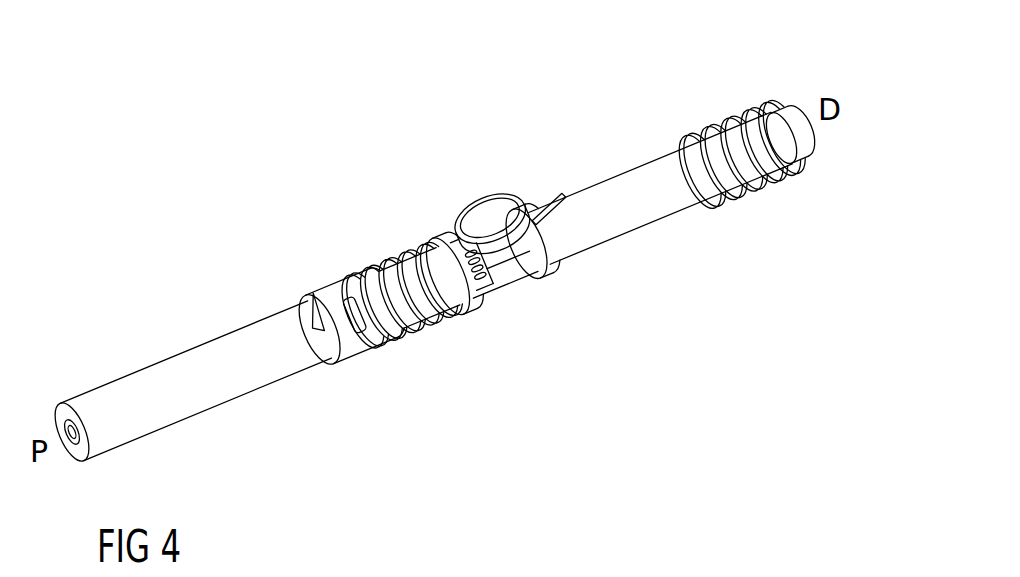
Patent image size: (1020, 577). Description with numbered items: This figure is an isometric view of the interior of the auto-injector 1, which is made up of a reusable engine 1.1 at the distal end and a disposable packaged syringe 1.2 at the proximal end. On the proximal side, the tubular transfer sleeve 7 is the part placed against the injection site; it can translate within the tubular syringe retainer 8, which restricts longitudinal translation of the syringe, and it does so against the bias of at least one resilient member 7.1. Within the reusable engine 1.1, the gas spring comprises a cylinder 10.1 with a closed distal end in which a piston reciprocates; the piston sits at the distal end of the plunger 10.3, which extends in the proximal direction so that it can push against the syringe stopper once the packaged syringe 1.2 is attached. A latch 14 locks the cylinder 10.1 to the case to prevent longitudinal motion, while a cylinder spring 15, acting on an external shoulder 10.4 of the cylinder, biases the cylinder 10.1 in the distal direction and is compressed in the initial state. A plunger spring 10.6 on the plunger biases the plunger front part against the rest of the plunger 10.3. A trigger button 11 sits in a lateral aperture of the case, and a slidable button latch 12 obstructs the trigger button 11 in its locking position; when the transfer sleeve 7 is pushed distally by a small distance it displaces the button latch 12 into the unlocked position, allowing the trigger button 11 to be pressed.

The auto-injector 1 is at (387, 67).
The reusable engine 1.1 is at (620, 153).
The disposable packaged syringe 1.2 is at (232, 303).
The transfer sleeve 7 is at (143, 383).
The resilient member 7.1 is at (312, 338).
The syringe retainer 8 is at (372, 278).
The cylinder 10.1 is at (590, 230).
The plunger 10.3 is at (498, 273).
The external shoulder 10.4 is at (790, 167).
The plunger spring 10.6 is at (477, 293).
The trigger button 11 is at (490, 212).
The button latch 12 is at (437, 242).
The latch 14 is at (553, 197).
The cylinder spring 15 is at (723, 117).